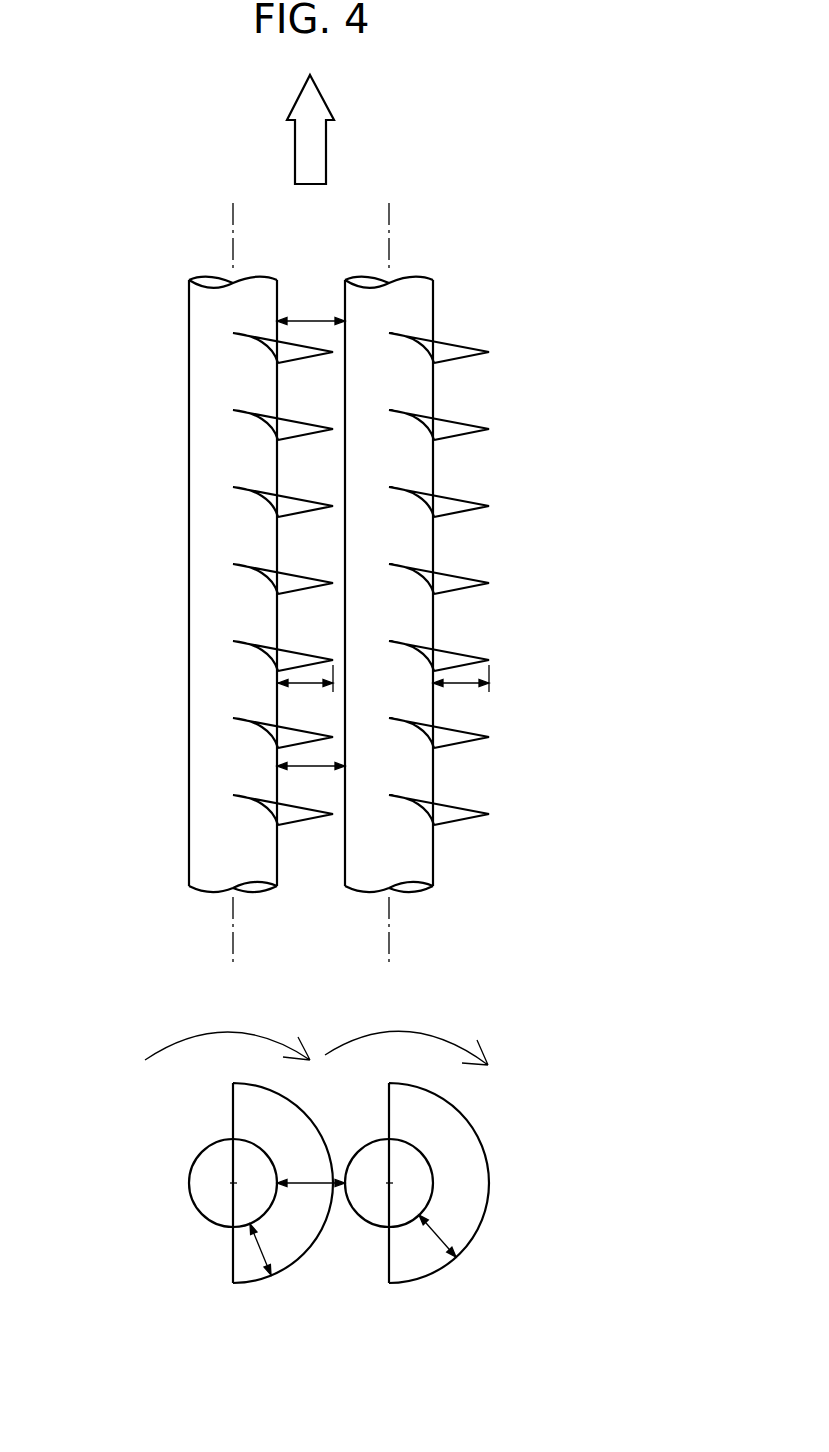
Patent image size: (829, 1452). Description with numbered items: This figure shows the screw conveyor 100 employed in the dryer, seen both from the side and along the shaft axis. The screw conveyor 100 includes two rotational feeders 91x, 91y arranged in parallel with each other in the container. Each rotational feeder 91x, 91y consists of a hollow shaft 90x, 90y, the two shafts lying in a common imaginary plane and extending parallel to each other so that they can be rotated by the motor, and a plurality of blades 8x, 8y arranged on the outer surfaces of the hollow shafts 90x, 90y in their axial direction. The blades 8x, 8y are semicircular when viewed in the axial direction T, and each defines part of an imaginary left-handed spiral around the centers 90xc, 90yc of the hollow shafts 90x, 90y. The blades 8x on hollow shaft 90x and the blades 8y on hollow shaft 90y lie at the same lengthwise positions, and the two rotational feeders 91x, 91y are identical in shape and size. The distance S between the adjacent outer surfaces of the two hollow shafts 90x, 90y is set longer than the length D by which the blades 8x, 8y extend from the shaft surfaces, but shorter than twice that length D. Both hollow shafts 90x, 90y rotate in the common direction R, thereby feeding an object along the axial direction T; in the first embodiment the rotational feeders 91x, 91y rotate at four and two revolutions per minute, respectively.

The screw conveyor 100 is at (103, 332).
The hollow shaft 90x is at (202, 399).
The hollow shaft 90y is at (417, 392).
The center of hollow shaft 90xc is at (233, 249).
The center of hollow shaft 90yc is at (389, 223).
The rotational feeder 91x is at (165, 560).
The rotational feeder 91y is at (455, 548).
The blades 8x is at (298, 436).
The blades 8y is at (457, 436).
The distance S is at (311, 318).
The length D is at (305, 688).
The direction T is at (326, 148).
The direction R is at (202, 1032).